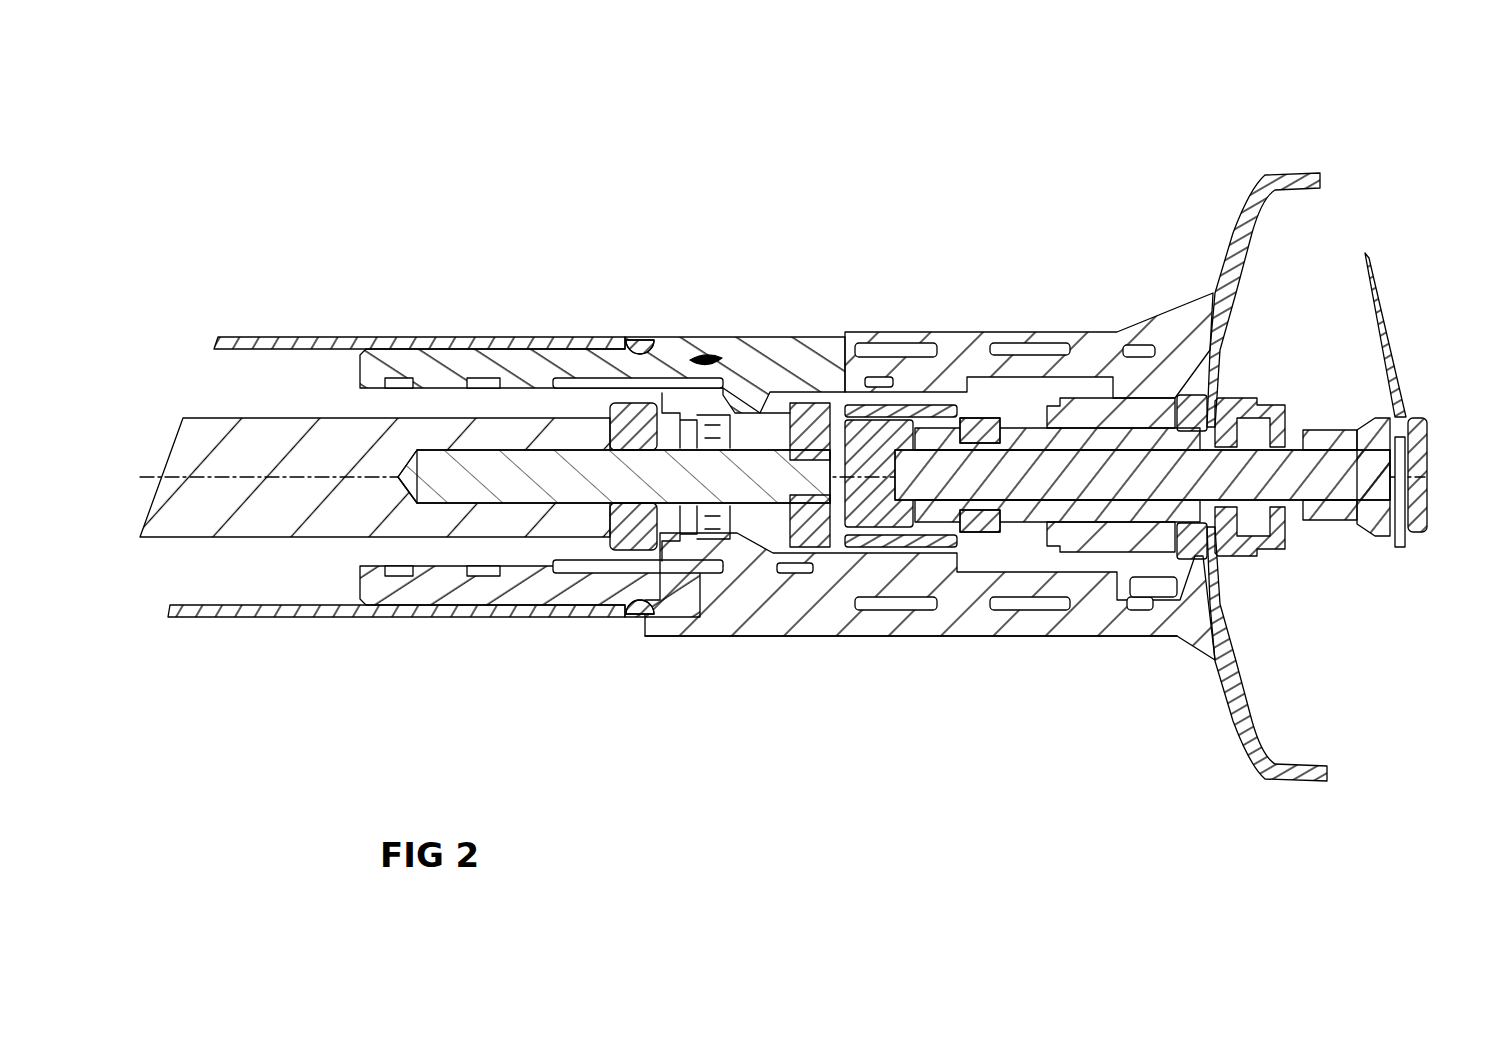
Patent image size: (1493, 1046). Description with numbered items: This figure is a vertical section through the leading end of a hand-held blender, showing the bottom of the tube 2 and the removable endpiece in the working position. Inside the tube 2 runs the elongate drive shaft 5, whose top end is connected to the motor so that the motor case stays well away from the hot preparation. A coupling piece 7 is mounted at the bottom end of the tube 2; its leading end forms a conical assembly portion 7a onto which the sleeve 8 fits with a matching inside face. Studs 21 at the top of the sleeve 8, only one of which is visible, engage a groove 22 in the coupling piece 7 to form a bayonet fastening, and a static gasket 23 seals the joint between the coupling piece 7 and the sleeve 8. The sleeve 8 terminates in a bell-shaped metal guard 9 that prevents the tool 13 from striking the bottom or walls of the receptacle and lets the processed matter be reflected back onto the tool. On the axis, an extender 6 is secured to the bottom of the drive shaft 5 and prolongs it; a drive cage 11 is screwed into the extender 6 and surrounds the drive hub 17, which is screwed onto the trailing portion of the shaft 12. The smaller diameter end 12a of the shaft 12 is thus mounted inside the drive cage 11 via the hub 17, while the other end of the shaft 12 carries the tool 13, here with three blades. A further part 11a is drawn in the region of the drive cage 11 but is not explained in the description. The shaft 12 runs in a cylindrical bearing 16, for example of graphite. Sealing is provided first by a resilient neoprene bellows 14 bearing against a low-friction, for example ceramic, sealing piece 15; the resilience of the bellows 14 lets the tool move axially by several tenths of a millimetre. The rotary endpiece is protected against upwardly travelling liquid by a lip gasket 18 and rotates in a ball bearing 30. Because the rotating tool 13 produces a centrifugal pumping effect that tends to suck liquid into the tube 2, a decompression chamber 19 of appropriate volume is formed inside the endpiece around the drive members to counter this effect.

The tube 2 is at (483, 618).
The drive shaft 5 is at (286, 447).
The extender 6 is at (543, 467).
The coupling piece 7 is at (538, 360).
The assembly portion 7a is at (758, 593).
The sleeve 8 is at (1137, 637).
The bell-shaped metal guard 9 is at (1247, 188).
The drive cage 11 is at (833, 410).
The piston seal 11a is at (940, 533).
The shaft 12 is at (1332, 485).
The smaller diameter end of the shaft 12a is at (902, 523).
The tool 13 is at (1410, 418).
The resilient bellows 14 is at (1262, 400).
The sealing piece 15 is at (1208, 550).
The cylindrical bearing 16 is at (1113, 437).
The drive hub 17 is at (973, 417).
The lip gasket 18 is at (703, 530).
The decompression chamber 19 is at (1018, 553).
The studs 21 is at (704, 355).
The groove 22 is at (738, 355).
The static gasket 23 is at (637, 343).
The ball bearing 30 is at (640, 537).